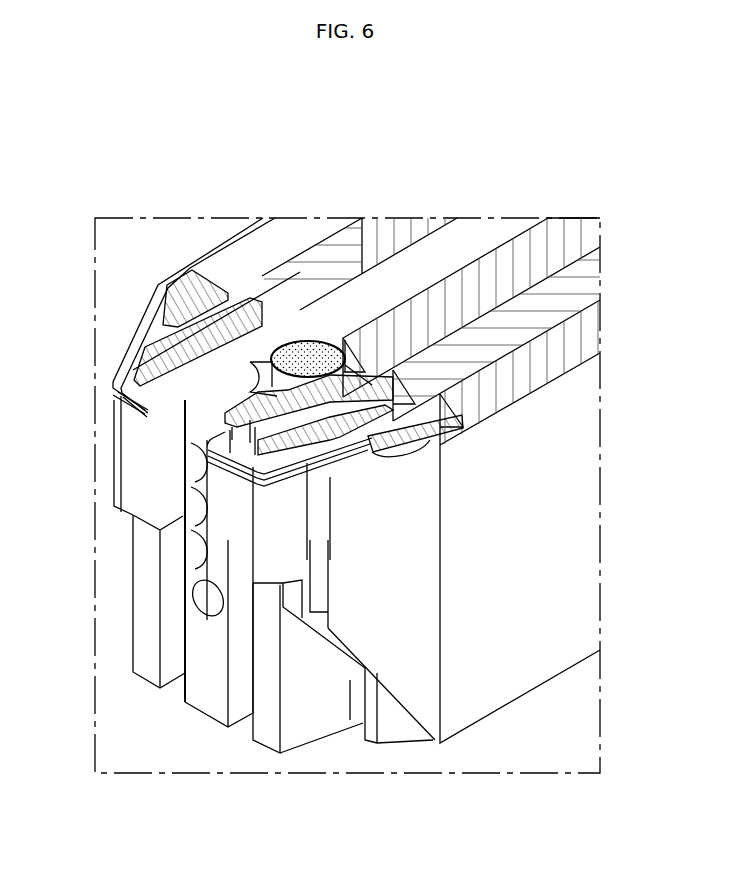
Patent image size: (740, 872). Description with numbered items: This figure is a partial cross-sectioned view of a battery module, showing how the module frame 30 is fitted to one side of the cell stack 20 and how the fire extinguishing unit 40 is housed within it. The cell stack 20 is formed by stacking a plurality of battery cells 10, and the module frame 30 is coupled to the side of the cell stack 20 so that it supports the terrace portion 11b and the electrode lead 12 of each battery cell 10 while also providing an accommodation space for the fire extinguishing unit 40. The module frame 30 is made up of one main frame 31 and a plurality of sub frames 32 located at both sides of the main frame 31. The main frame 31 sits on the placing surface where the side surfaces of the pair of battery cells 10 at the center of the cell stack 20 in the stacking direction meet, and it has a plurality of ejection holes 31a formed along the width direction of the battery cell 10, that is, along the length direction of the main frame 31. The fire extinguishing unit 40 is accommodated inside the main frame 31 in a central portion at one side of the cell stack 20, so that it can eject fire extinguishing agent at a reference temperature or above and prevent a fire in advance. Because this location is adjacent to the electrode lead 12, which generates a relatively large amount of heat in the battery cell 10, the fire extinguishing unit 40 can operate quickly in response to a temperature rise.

The battery cell 10 is at (478, 226).
The terrace portion 11b is at (390, 496).
The electrode lead 12 is at (272, 540).
The cell stack 20 is at (339, 192).
The module frame 30 is at (154, 144).
The main frame 31 is at (207, 706).
The ejection hole 31a is at (226, 406).
The sub frame 32 is at (180, 303).
The fire extinguishing unit 40 is at (308, 358).